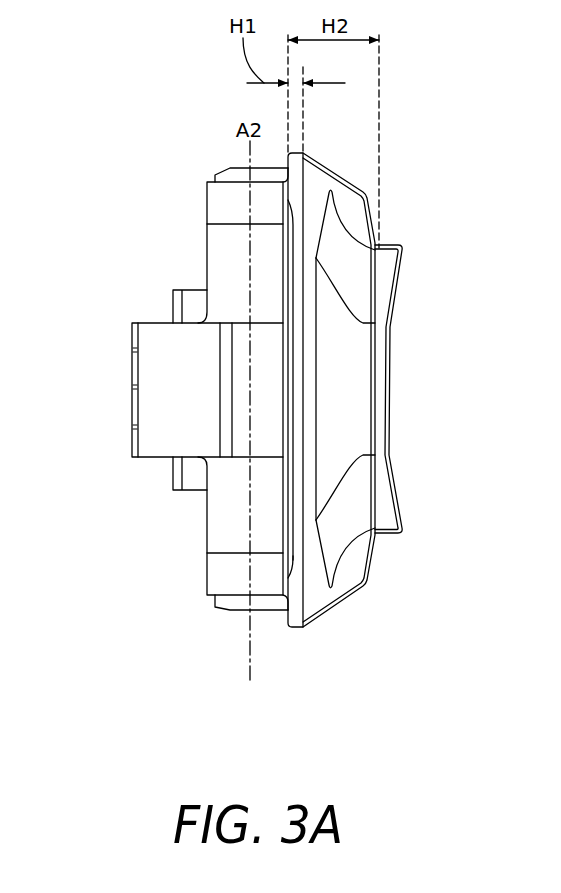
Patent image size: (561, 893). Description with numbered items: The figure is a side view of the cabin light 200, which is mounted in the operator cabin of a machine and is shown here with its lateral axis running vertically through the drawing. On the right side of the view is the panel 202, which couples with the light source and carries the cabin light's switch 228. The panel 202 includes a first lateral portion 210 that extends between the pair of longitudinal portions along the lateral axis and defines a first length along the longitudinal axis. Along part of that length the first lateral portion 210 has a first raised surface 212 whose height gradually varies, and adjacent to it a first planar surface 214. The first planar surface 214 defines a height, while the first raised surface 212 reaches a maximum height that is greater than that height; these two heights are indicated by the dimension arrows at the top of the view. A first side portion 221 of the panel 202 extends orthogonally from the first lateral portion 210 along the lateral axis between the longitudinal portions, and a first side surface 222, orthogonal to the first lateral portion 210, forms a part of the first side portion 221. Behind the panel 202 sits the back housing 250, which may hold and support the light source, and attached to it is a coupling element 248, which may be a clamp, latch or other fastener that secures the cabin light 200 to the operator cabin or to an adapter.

The cabin light 200 is at (330, 374).
The panel 202 is at (378, 593).
The first lateral portion 210 is at (315, 562).
The first raised surface 212 is at (347, 392).
The first planar surface 214 is at (308, 480).
The first side portion 221 is at (290, 582).
The first side surface 222 is at (291, 518).
The switch 228 is at (410, 290).
The coupling element 248 is at (155, 405).
The back housing 250 is at (225, 250).